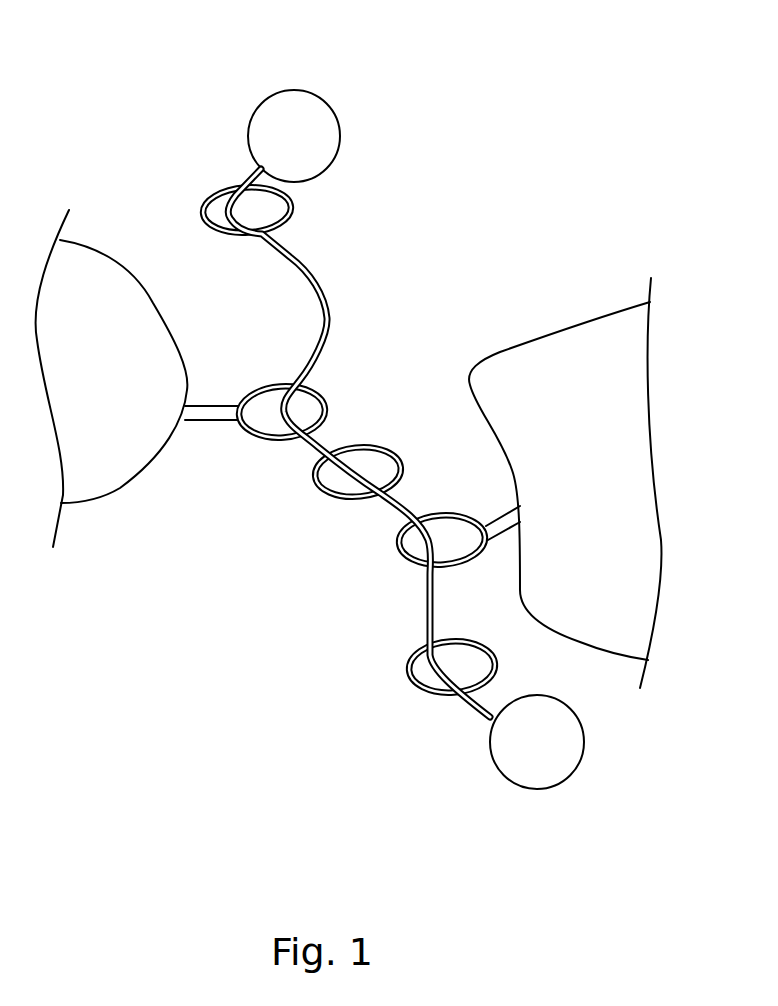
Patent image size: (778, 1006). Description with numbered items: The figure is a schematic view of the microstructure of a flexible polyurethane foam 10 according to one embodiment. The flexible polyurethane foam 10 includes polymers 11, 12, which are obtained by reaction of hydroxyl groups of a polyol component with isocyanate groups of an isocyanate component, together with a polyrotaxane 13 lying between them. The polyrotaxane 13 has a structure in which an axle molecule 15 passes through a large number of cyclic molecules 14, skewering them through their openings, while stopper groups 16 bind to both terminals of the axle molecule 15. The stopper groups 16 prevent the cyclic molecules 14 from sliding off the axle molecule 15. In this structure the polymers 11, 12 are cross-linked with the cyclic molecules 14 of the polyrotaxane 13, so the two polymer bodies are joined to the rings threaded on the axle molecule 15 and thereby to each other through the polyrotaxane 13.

The flexible polyurethane foam 10 is at (570, 99).
The polymer 11 is at (110, 482).
The polymer 12 is at (534, 352).
The polyrotaxane 13 is at (354, 258).
The cyclic molecules 14 is at (201, 212).
The axle molecule 15 is at (323, 327).
The stopper groups 16 is at (318, 138).